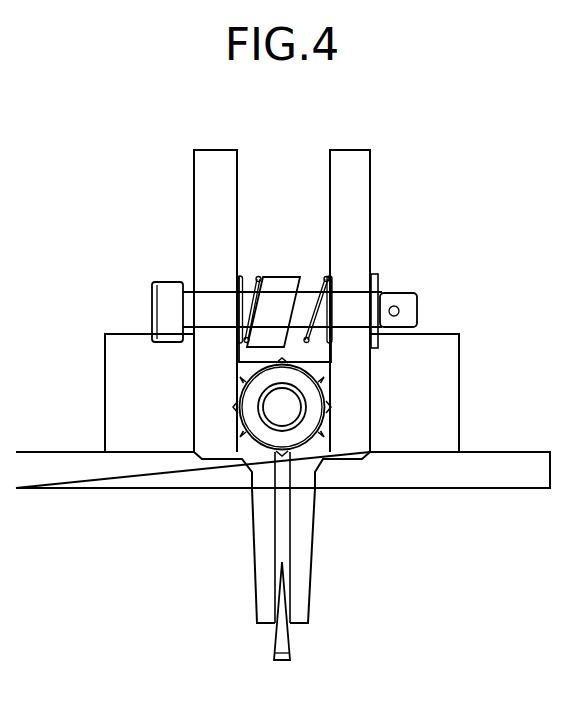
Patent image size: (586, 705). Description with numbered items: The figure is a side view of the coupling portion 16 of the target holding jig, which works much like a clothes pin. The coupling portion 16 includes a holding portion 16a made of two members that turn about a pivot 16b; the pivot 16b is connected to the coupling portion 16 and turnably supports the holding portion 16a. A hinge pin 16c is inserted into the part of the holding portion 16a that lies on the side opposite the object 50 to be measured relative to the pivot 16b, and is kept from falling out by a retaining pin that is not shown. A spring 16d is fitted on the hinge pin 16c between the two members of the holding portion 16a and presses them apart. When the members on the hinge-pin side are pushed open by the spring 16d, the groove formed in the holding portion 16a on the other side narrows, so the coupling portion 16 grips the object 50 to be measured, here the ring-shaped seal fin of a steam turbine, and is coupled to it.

The coupling portion 16 is at (220, 460).
The holding portion 16a is at (213, 157).
The pivot 16b is at (315, 407).
The hinge pin 16c is at (163, 300).
The spring 16d is at (260, 277).
The object to be measured 50 is at (283, 637).